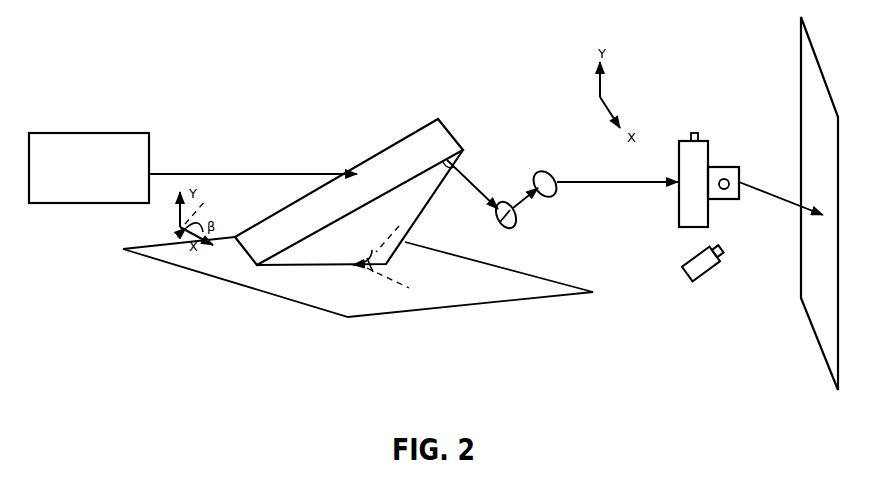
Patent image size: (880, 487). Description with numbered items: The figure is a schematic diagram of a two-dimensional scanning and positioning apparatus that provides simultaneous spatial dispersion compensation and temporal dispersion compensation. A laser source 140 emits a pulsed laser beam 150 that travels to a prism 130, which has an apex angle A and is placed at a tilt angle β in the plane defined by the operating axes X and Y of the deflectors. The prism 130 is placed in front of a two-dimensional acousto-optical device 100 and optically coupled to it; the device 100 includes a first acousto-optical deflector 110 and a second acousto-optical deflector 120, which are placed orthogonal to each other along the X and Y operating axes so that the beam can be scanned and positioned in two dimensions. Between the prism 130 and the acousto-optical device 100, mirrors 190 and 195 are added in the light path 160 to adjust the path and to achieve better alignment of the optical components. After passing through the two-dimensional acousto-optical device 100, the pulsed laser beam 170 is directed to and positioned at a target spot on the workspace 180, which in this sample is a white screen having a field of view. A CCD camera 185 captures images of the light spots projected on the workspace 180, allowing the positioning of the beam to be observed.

The two-dimensional acousto-optical device 100 is at (693, 143).
The first acousto-optical deflector 110 is at (693, 130).
The second acousto-optical deflector 120 is at (718, 165).
The prism 130 is at (377, 145).
The laser source 140 is at (105, 133).
The pulsed laser beam 150 is at (224, 172).
The light path 160 is at (466, 182).
The pulsed laser beam 170 is at (767, 190).
The workspace 180 is at (822, 327).
The CCD camera 185 is at (708, 278).
The mirror 190 is at (518, 222).
The mirror 195 is at (537, 168).